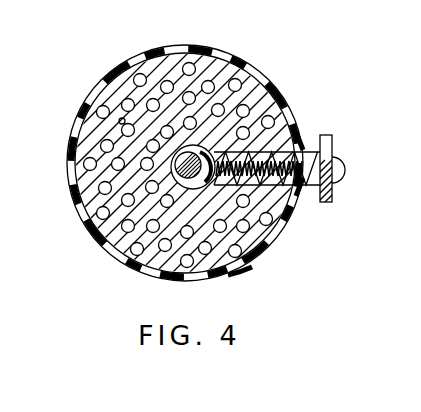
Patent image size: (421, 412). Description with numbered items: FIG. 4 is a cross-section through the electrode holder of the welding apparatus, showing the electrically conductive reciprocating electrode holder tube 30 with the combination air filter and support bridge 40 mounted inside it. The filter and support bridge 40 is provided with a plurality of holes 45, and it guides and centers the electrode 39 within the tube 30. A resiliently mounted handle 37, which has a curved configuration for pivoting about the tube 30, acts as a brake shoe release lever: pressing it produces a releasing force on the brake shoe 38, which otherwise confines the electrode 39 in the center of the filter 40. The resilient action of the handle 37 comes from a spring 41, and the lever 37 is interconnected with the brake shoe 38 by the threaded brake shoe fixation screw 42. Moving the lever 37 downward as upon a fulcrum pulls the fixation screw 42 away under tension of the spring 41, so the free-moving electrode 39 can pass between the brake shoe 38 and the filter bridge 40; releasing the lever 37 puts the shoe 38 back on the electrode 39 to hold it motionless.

The tube 30 is at (143, 52).
The brake shoe 38 is at (262, 85).
The combination air filter and support bridge 40 is at (120, 120).
The electrode 39 is at (173, 182).
The spring 41 is at (301, 141).
The brake shoe fixation screw 42 is at (302, 188).
The handle 37 is at (336, 185).
The holes 45 is at (244, 271).